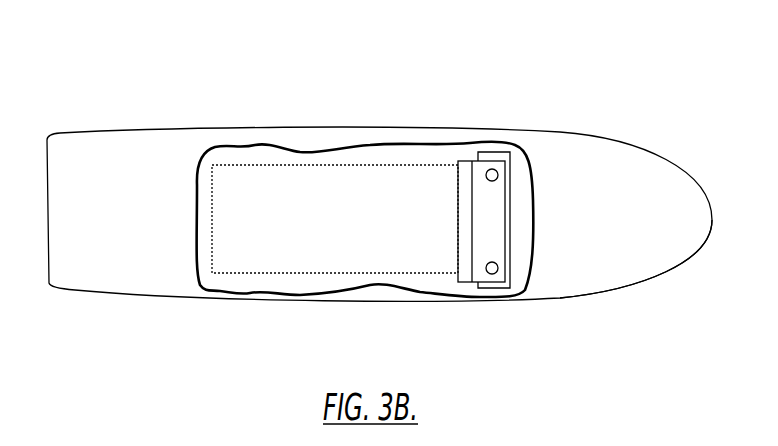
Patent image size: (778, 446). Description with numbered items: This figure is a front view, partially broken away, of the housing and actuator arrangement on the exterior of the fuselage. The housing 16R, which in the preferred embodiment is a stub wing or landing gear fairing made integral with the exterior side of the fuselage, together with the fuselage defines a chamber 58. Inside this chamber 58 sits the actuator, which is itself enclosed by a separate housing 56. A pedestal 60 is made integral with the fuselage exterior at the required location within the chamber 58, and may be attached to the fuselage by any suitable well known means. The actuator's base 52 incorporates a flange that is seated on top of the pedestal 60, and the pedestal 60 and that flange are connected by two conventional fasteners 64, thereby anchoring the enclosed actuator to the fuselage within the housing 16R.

The housing 16R is at (545, 103).
The base 52 is at (463, 163).
The housing 56 is at (265, 247).
The chamber 58 is at (630, 278).
The pedestal 60 is at (490, 153).
The fasteners 64 is at (497, 270).